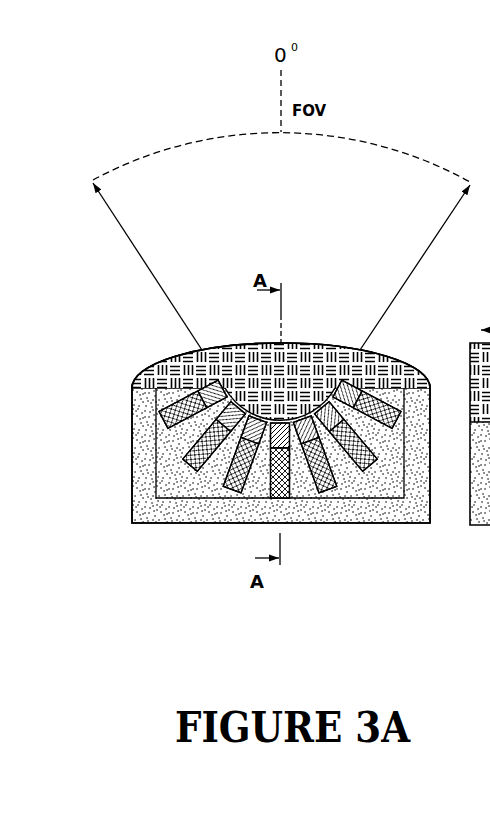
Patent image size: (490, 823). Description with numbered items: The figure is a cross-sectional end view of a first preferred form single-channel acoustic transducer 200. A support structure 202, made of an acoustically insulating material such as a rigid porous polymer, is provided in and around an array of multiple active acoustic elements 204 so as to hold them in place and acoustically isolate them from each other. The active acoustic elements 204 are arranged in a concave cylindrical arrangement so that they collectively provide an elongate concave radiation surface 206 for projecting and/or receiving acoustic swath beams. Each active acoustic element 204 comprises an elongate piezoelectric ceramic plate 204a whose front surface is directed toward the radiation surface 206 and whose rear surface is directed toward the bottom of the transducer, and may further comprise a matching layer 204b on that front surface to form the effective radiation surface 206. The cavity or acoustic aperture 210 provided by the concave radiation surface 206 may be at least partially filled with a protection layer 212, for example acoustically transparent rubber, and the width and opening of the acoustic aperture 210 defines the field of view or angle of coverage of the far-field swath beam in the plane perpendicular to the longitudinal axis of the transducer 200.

The acoustic transducer 200 is at (110, 376).
The support structure 202 is at (170, 484).
The active acoustic elements 204 is at (270, 494).
The piezoelectric ceramic plate 204a is at (290, 498).
The matching layer 204b is at (291, 448).
The concave radiation surface 206 is at (236, 394).
The acoustic aperture 210 is at (289, 387).
The protection layer 212 is at (396, 373).